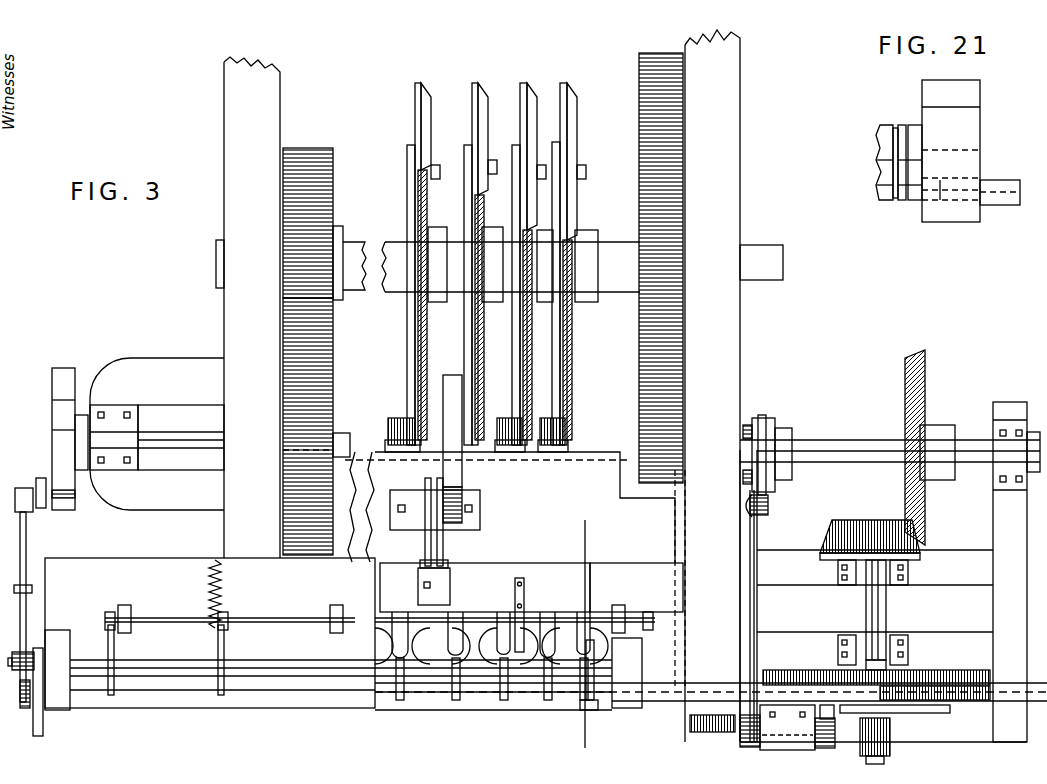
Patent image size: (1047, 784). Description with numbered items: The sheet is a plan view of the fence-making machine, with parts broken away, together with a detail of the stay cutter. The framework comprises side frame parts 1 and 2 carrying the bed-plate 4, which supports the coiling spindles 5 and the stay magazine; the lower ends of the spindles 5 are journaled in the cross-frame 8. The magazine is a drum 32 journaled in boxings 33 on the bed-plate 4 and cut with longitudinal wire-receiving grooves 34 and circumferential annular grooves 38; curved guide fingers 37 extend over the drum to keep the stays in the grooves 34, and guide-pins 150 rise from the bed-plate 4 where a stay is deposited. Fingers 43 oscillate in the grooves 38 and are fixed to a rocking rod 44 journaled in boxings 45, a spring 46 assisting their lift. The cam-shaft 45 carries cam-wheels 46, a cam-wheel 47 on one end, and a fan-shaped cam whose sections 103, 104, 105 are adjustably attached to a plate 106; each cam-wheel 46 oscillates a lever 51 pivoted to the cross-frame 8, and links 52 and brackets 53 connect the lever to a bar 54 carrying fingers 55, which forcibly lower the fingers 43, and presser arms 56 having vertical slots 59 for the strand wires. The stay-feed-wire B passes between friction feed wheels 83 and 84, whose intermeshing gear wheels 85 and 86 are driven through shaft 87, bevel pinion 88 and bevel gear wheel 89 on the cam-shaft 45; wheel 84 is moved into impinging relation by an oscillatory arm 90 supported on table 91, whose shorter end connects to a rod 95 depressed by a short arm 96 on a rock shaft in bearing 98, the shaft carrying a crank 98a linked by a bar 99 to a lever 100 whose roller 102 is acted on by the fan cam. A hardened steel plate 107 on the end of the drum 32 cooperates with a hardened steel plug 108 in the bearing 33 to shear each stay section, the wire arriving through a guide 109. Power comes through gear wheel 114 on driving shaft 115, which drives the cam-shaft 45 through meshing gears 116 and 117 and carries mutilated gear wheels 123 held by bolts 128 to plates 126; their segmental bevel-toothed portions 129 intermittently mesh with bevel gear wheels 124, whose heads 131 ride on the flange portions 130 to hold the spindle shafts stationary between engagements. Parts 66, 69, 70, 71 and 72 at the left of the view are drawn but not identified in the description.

In FIG. 3, the side frame part 1 is at (712, 386).
In FIG. 3, the side frame part 2 is at (248, 307).
In FIG. 3, the bed-plate 4 is at (707, 637).
In FIG. 3, the spindle 5 is at (592, 631).
In FIG. 3, the cross-frame part 8 is at (510, 507).
In FIG. 3, the magazine drum 32 is at (565, 696).
In FIG. 21, the magazine drum 32 is at (880, 130).
In FIG. 3, the boxing 33 is at (62, 698).
In FIG. 21, the boxing 33 is at (975, 116).
In FIG. 3, the wire receiving groove 34 is at (535, 700).
In FIG. 21, the wire receiving groove 34 is at (878, 166).
In FIG. 3, the curved guide finger 37 is at (592, 704).
In FIG. 3, the annular groove 38 is at (458, 700).
In FIG. 21, the annular groove 38 is at (896, 178).
In FIG. 3, the finger 43 is at (114, 640).
In FIG. 3, the rocking rod 44 is at (170, 618).
In FIG. 3, the cam-shaft 45 is at (172, 445).
In FIG. 3, the cam-wheel 46 is at (450, 375).
In FIG. 3, the cam-wheel 47 is at (65, 380).
In FIG. 3, the lever 51 is at (440, 482).
In FIG. 3, the link 52 is at (446, 538).
In FIG. 3, the bracket 53 is at (450, 582).
In FIG. 3, the bar 54 is at (510, 568).
In FIG. 3, the finger 55 is at (515, 600).
In FIG. 3, the presser arm 56 is at (327, 587).
In FIG. 3, the vertical slot 59 is at (352, 658).
In FIG. 3, the head 66 is at (45, 505).
In FIG. 3, the rod 69 is at (27, 572).
In FIG. 3, the block 70 is at (40, 718).
In FIG. 3, the pin 71 is at (26, 708).
In FIG. 3, the gear 72 is at (30, 668).
In FIG. 3, the friction feed wheel 83 is at (985, 702).
In FIG. 3, the friction feed wheel 84 is at (915, 702).
In FIG. 3, the gear wheel 85 is at (950, 672).
In FIG. 3, the gear wheel 86 is at (840, 672).
In FIG. 3, the shaft 87 is at (884, 612).
In FIG. 3, the bevel pinion 88 is at (848, 520).
In FIG. 3, the bevel gear wheel 89 is at (926, 398).
In FIG. 3, the oscillatory arm 90 is at (948, 712).
In FIG. 3, the table 91 is at (950, 650).
In FIG. 3, the rod 95 is at (822, 706).
In FIG. 3, the short arm 96 is at (826, 748).
In FIG. 3, the bearing 98 is at (798, 750).
In FIG. 3, the crank 98a is at (739, 736).
In FIG. 3, the bar 99 is at (754, 604).
In FIG. 3, the lever 100 is at (756, 530).
In FIG. 3, the roller 102 is at (768, 512).
In FIG. 3, the cam section 103 is at (765, 420).
In FIG. 3, the cam section 104 is at (760, 418).
In FIG. 3, the cam section 105 is at (750, 424).
In FIG. 3, the plate 106 is at (785, 445).
In FIG. 21, the hardened steel plate 107 is at (918, 128).
In FIG. 21, the hardened steel plug 108 is at (936, 192).
In FIG. 3, the guide 109 is at (676, 706).
In FIG. 21, the guide 109 is at (1008, 200).
In FIG. 3, the gear wheel 114 is at (684, 165).
In FIG. 3, the driving shaft 115 is at (606, 258).
In FIG. 3, the gear 116 is at (333, 182).
In FIG. 3, the gear 117 is at (333, 364).
In FIG. 3, the mutilated gear wheel 123 is at (566, 214).
In FIG. 3, the bevel gear wheel 124 is at (402, 420).
In FIG. 3, the plate 126 is at (557, 155).
In FIG. 3, the bolt 128 is at (430, 162).
In FIG. 3, the segmental bevel-toothed portion 129 is at (570, 342).
In FIG. 3, the flange portion 130 is at (566, 118).
In FIG. 3, the head 131 is at (386, 444).
In FIG. 3, the guide-pin 150 is at (432, 700).
In FIG. 3, the stay-feed-wire B is at (1013, 679).